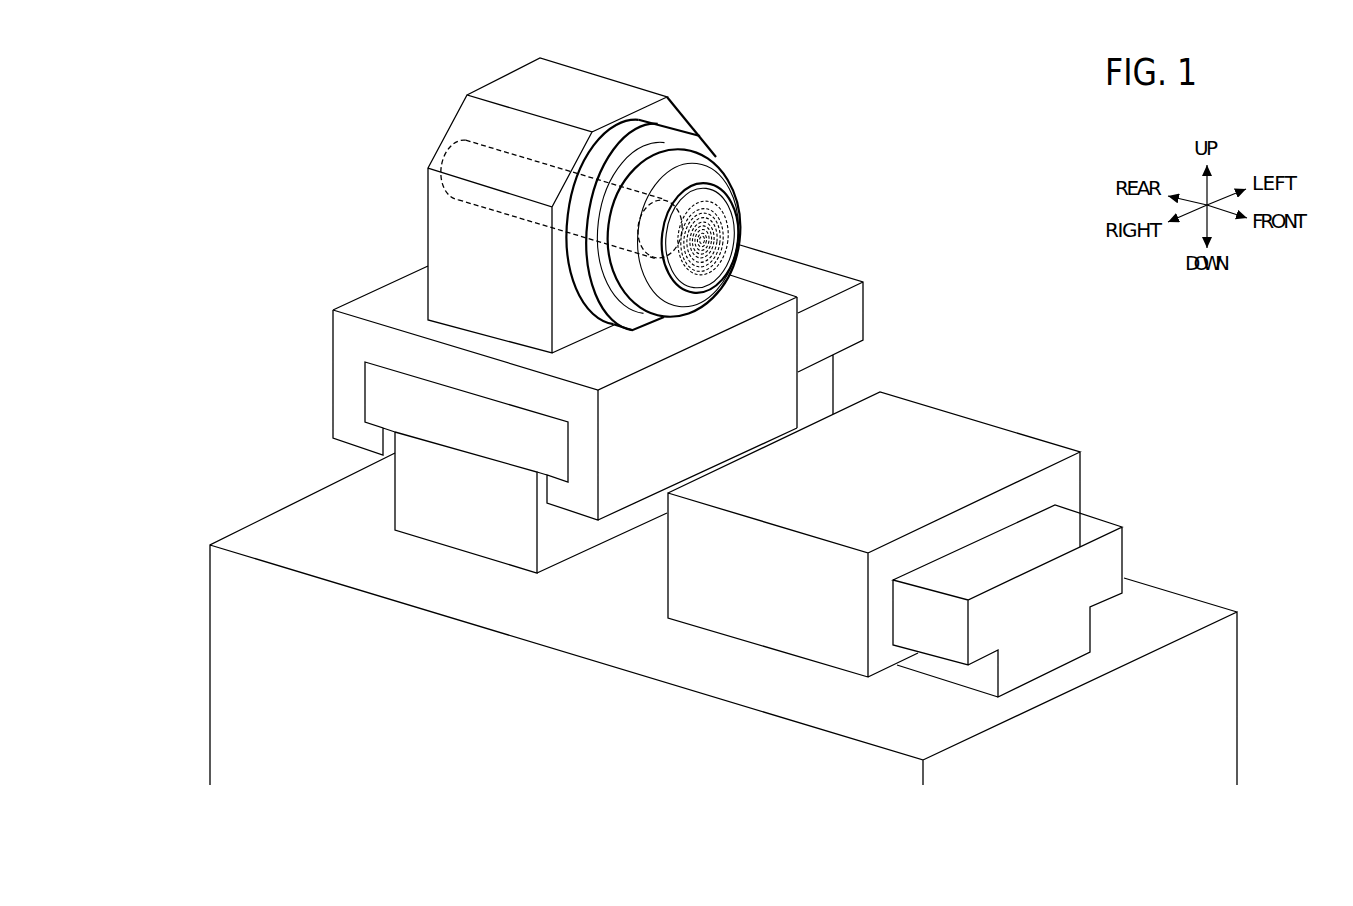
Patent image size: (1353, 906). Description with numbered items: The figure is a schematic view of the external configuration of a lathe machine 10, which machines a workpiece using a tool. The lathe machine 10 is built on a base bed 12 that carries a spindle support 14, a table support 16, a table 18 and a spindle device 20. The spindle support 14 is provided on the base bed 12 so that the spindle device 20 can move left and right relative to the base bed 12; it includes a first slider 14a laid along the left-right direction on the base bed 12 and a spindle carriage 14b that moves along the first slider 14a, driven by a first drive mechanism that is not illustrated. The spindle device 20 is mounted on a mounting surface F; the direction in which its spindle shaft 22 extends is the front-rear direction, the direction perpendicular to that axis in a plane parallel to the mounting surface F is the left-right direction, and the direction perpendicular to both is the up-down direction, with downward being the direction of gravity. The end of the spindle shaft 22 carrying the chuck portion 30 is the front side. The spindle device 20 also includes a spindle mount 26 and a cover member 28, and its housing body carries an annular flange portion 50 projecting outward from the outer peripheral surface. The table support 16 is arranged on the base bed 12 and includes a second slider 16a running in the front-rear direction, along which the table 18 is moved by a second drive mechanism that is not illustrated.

The lathe machine 10 is at (293, 152).
The base bed 12 is at (207, 650).
The spindle support 14 is at (287, 392).
The first slider 14a is at (472, 518).
The spindle carriage 14b is at (350, 338).
The mounting surface F is at (388, 303).
The table support 16 is at (1163, 503).
The second slider 16a is at (1113, 556).
The table 18 is at (725, 607).
The spindle device 20 is at (706, 118).
The spindle shaft 22 is at (497, 149).
The spindle mount 26 is at (448, 225).
The cover member 28 is at (665, 160).
The chuck portion 30 is at (730, 220).
The flange portion 50 is at (617, 138).